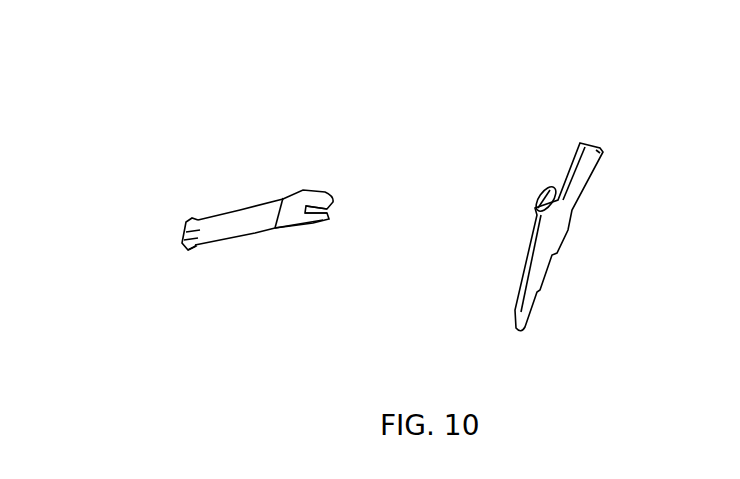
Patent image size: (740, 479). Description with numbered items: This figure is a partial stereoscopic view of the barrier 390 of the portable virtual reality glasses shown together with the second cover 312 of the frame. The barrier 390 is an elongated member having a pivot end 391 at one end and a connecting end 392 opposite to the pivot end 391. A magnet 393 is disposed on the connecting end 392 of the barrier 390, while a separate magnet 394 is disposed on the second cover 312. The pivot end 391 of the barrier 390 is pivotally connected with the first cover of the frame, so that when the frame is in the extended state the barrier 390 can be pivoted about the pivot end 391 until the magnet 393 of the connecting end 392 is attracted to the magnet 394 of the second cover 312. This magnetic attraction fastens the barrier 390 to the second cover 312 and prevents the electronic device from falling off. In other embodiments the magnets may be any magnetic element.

The barrier 390 is at (242, 192).
The pivot end 391 is at (315, 223).
The connecting end 392 is at (195, 247).
The magnet 393 is at (186, 233).
The second cover 312 is at (555, 157).
The magnet 394 is at (540, 195).